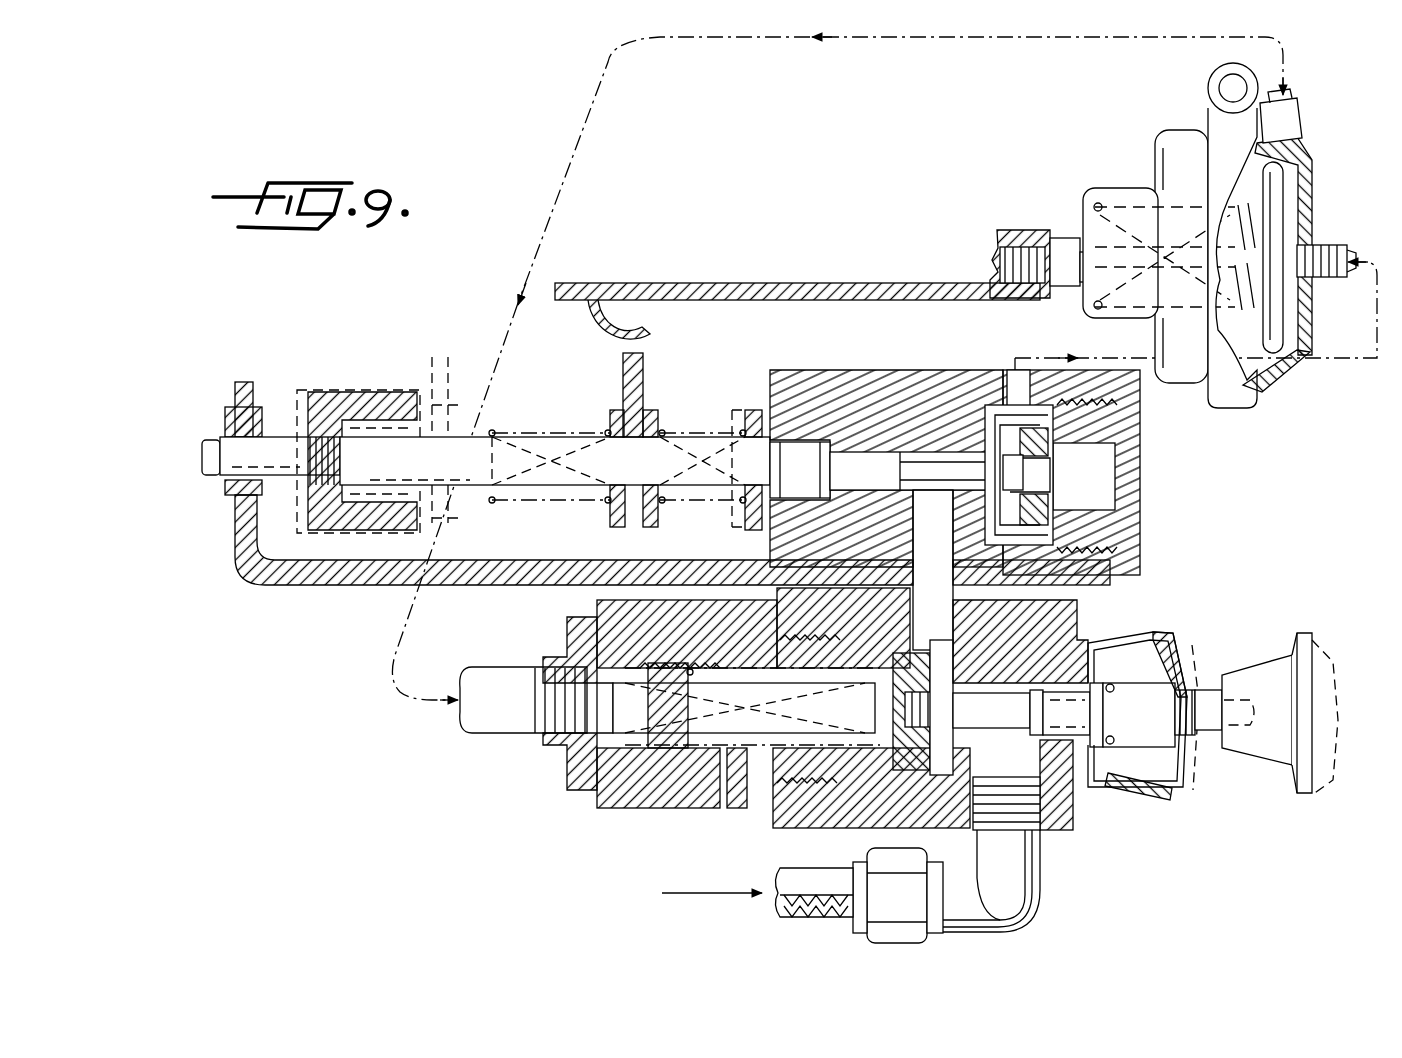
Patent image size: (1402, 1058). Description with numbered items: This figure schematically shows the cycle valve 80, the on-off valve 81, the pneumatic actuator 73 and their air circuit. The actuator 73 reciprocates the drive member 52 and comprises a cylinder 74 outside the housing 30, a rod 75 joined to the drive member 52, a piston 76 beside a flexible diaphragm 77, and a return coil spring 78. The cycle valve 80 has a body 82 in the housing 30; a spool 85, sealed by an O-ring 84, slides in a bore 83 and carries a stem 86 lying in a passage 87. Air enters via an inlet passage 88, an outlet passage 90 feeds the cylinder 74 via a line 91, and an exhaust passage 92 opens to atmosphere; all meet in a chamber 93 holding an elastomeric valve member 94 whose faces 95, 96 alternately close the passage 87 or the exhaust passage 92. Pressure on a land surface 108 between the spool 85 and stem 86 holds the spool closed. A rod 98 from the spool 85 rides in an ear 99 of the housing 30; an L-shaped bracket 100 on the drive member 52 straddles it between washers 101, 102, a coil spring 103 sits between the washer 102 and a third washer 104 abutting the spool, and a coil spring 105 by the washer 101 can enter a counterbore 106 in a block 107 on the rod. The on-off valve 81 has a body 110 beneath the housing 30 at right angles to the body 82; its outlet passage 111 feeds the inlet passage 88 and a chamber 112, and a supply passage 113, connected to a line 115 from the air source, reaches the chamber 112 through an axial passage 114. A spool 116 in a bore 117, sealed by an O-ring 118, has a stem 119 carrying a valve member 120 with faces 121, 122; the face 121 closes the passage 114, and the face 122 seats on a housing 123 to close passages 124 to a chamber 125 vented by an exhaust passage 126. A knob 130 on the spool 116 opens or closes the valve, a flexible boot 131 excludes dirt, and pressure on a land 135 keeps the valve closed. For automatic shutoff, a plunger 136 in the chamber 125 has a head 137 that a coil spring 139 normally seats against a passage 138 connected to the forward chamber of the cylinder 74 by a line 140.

The housing 30 is at (350, 586).
The drive member 52 is at (982, 270).
The pneumatic actuator 73 is at (1220, 236).
The cylinder 74 is at (1275, 385).
The rod 75 is at (1068, 238).
The piston 76 is at (1280, 188).
The flexible diaphragm 77 is at (1308, 212).
The coil spring 78 is at (1300, 282).
The cycle valve 80 is at (966, 482).
The on-off valve 81 is at (923, 767).
The body 82 is at (795, 378).
The bore 83 is at (782, 500).
The O-ring 84 is at (800, 470).
The spool 85 is at (803, 415).
The stem 86 is at (890, 492).
The passage 87 is at (901, 408).
The inlet passage 88 is at (913, 545).
The outlet passage 90 is at (1015, 385).
The line 91 is at (1040, 362).
The exhaust passage 92 is at (1135, 506).
The chamber 93 is at (1048, 530).
The elastomeric valve member 94 is at (1050, 500).
The rear face 95 is at (970, 465).
The forward face 96 is at (1048, 455).
The rod 98 is at (477, 495).
The ear 99 is at (233, 415).
The L-shaped bracket 100 is at (622, 380).
The washer 101 is at (608, 512).
The washer 102 is at (657, 522).
The coil spring 103 is at (655, 430).
The third washer 104 is at (752, 405).
The coil spring 105 is at (608, 425).
The counterbore 106 is at (377, 423).
The block 107 is at (410, 385).
The land surface 108 is at (850, 440).
The body 110 is at (937, 825).
The outlet passage 111 is at (863, 606).
The chamber 112 is at (916, 802).
The supply passage 113 is at (1068, 820).
The axial passage 114 is at (1020, 715).
The line 115 is at (820, 915).
The spool 116 is at (1175, 757).
The bore 117 is at (1140, 690).
The O-ring 118 is at (1120, 795).
The reduced-diameter stem 119 is at (944, 709).
The valve member 120 is at (950, 640).
The valve face 121 is at (945, 680).
The valve face 122 is at (885, 725).
The housing 123 is at (780, 808).
The passages 124 is at (812, 652).
The chamber 125 is at (745, 640).
The exhaust passage 126 is at (720, 810).
The knob 130 is at (1328, 648).
The flexible boot 131 is at (1150, 627).
The land 135 is at (1092, 640).
The plunger 136 is at (678, 775).
The head 137 is at (575, 760).
The passage 138 is at (580, 648).
The coil spring 139 is at (692, 665).
The line 140 is at (1300, 112).